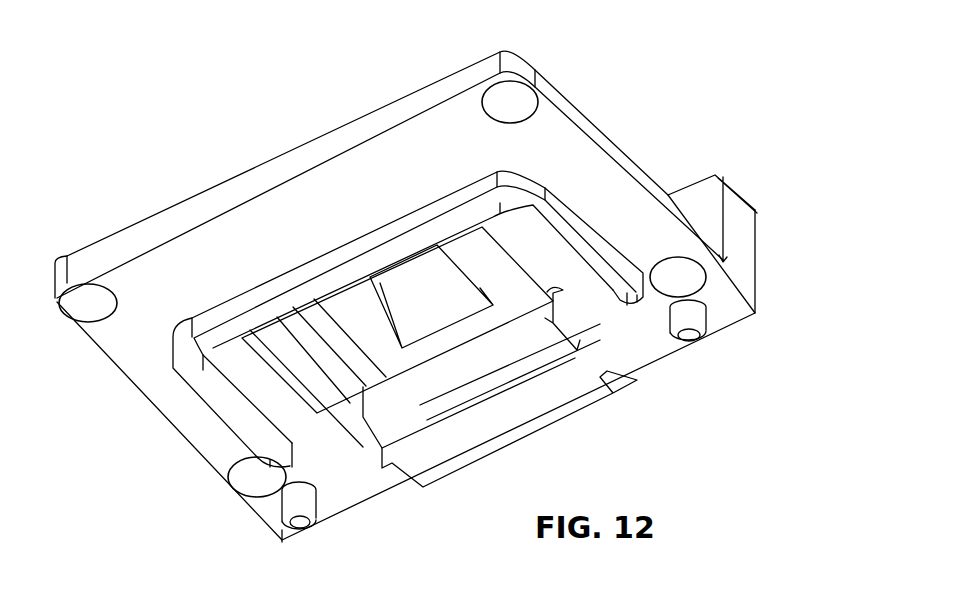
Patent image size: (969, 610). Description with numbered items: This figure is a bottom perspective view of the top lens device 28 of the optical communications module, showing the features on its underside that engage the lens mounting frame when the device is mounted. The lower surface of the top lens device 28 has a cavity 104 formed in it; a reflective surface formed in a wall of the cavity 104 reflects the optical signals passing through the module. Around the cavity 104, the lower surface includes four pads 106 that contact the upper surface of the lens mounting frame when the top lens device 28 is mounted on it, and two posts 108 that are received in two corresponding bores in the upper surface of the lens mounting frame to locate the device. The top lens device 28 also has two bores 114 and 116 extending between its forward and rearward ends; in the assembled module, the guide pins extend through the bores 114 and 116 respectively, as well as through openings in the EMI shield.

The top lens device 28 is at (748, 86).
The cavity 104 is at (480, 380).
The pads 106 is at (523, 92).
The posts 108 is at (675, 338).
The bore 114 is at (393, 386).
The bore 116 is at (555, 292).